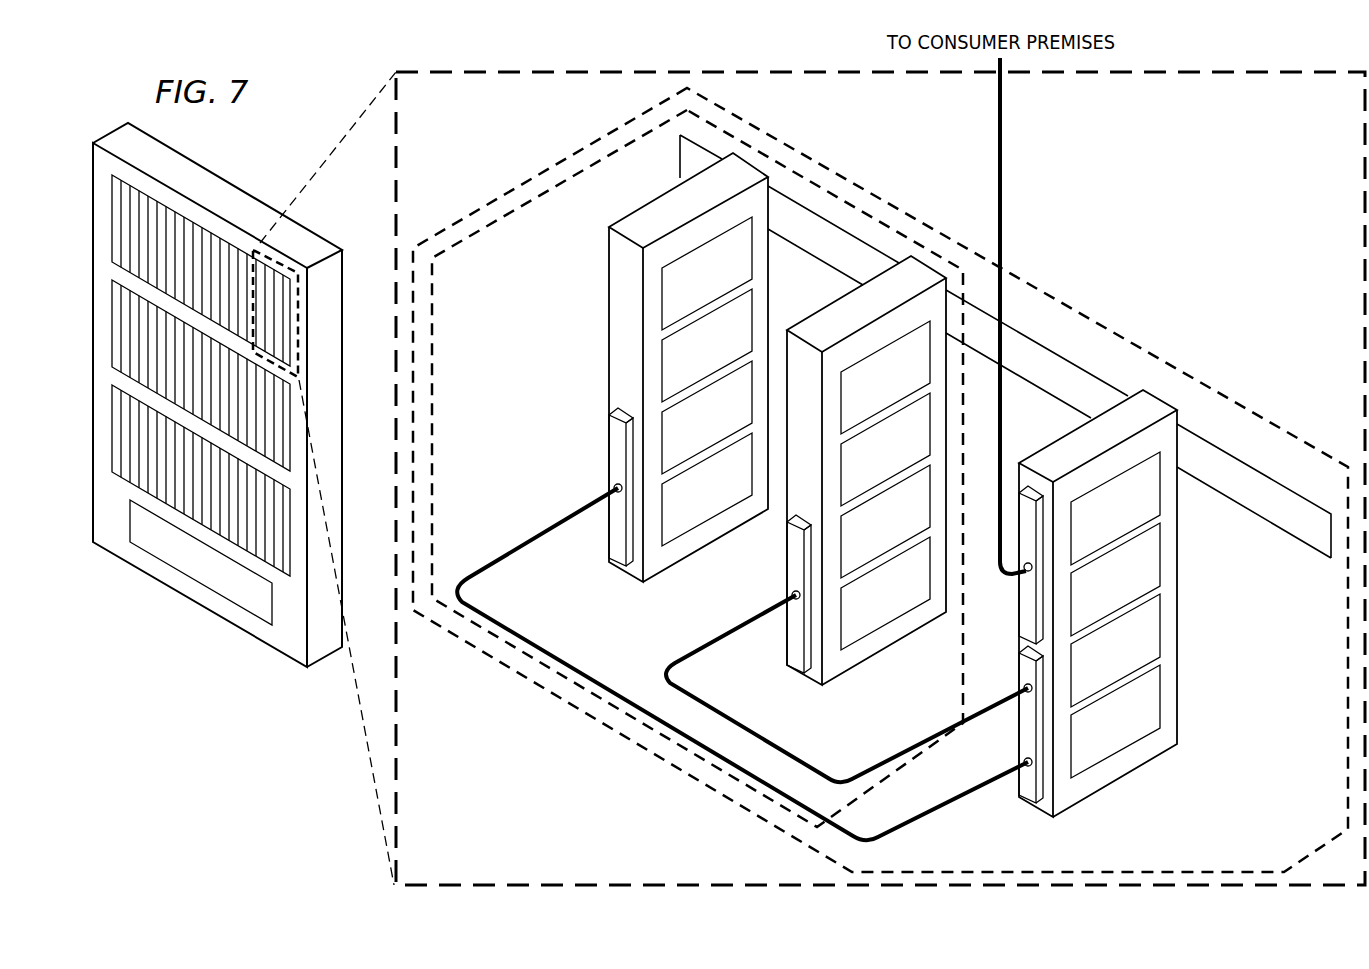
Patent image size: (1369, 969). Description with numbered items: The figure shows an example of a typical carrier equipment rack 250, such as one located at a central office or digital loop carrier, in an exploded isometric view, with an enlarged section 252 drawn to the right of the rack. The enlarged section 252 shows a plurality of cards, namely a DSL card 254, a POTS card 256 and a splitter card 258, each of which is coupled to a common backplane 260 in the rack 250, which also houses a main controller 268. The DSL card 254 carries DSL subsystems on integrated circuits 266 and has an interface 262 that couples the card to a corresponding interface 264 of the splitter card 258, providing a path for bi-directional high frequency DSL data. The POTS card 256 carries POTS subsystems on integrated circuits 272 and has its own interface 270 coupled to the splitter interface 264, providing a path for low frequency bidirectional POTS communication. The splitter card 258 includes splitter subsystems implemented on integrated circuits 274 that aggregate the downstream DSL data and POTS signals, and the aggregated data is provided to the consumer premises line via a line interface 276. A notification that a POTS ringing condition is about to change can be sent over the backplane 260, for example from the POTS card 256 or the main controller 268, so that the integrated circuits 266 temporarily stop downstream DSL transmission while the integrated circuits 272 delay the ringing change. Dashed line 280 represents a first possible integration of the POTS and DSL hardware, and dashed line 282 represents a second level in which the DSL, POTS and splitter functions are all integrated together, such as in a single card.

The rack 250 is at (237, 628).
The enlarged section 252 is at (1202, 179).
The DSL card 254 is at (661, 389).
The POTS card 256 is at (836, 493).
The splitter card 258 is at (1070, 619).
The backplane 260 is at (1322, 543).
The interface 262 is at (612, 540).
The interface 264 is at (1018, 748).
The integrated circuits 266 is at (672, 292).
The main controller 268 is at (213, 587).
The interface 270 is at (787, 645).
The integrated circuits 272 is at (863, 373).
The integrated circuits 274 is at (1097, 503).
The line interface 276 is at (1022, 596).
The dashed line 280 is at (493, 405).
The dashed line 282 is at (1244, 668).